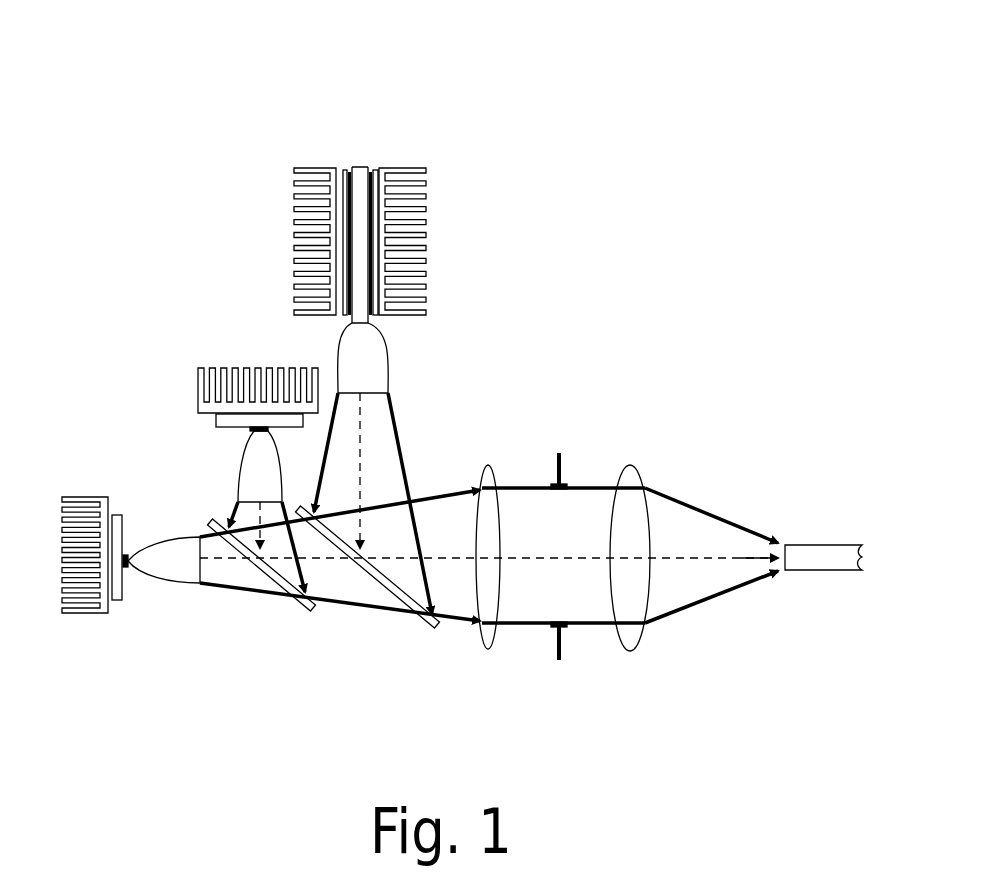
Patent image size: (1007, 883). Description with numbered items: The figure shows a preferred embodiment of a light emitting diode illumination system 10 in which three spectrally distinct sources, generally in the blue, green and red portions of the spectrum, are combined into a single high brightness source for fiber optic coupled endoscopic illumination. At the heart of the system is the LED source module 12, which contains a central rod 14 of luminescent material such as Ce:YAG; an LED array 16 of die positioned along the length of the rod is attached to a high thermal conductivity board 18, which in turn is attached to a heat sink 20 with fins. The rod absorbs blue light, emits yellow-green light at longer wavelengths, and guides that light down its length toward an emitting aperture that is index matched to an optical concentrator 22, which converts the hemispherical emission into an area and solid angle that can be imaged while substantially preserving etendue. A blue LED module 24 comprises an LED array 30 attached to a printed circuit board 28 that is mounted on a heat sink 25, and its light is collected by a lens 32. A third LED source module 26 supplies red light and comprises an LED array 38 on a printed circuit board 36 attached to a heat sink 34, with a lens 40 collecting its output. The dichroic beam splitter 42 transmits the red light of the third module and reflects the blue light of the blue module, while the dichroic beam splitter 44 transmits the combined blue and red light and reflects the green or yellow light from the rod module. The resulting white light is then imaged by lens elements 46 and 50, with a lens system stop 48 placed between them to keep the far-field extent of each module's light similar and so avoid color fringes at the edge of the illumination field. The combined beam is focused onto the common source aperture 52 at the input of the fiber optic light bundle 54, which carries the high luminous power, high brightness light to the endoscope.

The illumination system 10 is at (508, 350).
The LED source module 12 is at (447, 133).
The central rod 14 is at (372, 182).
The LED array 16 is at (353, 180).
The high thermal conductivity board 18 is at (345, 178).
The heat sink 20 is at (335, 183).
The optical concentrator 22 is at (372, 368).
The blue LED module 24 is at (174, 350).
The heat sink 25 is at (242, 368).
The third LED source module 26 is at (70, 448).
The printed circuit board 28 is at (218, 423).
The LED array 30 is at (247, 430).
The lens 32 is at (250, 486).
The heat sink 34 is at (103, 612).
The printed circuit board 36 is at (117, 602).
The LED array 38 is at (129, 570).
The lens 40 is at (168, 562).
The dichroic beam splitter 42 is at (272, 578).
The dichroic beam splitter 44 is at (397, 598).
The lens element 46 is at (490, 585).
The lens system stop 48 is at (552, 635).
The lens element 50 is at (630, 592).
The source aperture 52 is at (368, 323).
The fiber optic light bundle 54 is at (838, 548).